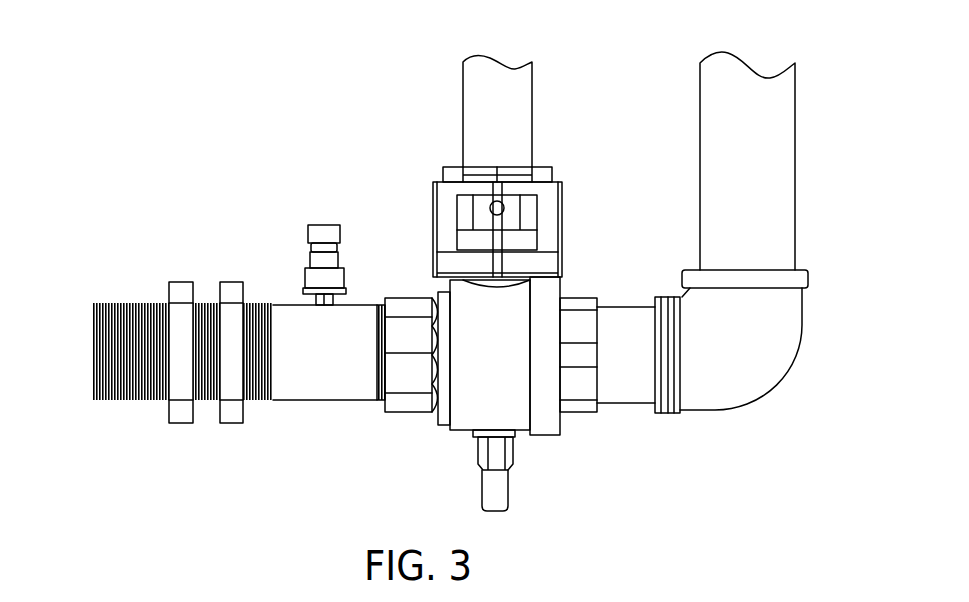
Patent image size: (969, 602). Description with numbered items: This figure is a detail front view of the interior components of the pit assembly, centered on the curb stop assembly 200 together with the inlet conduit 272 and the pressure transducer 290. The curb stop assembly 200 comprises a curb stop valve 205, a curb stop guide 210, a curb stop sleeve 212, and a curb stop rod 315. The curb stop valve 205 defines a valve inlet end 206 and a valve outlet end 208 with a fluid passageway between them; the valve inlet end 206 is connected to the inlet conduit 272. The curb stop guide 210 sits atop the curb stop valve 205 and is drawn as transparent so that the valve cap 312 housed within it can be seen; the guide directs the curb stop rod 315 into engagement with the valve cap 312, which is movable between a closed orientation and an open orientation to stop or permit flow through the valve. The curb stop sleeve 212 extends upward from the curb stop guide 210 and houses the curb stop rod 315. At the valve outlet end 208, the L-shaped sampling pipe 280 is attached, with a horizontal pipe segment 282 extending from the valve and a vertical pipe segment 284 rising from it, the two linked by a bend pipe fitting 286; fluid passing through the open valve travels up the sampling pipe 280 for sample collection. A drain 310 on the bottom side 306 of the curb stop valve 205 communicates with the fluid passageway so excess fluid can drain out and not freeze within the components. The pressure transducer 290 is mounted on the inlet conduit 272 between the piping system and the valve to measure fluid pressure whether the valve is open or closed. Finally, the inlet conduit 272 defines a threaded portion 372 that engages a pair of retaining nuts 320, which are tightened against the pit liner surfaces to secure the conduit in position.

The curb stop assembly 200 is at (586, 188).
The curb stop valve 205 is at (497, 355).
The valve inlet end 206 is at (378, 352).
The valve outlet end 208 is at (600, 325).
The curb stop guide 210 is at (433, 215).
The curb stop sleeve 212 is at (498, 84).
The inlet conduit 272 is at (300, 318).
The sampling pipe 280 is at (814, 178).
The horizontal pipe segment 282 is at (625, 385).
The vertical pipe segment 284 is at (773, 140).
The bend pipe fitting 286 is at (787, 337).
The pressure transducer 290 is at (319, 222).
The bottom side 306 is at (456, 437).
The drain 310 is at (488, 490).
The valve cap 312 is at (538, 268).
The curb stop rod 315 is at (515, 195).
The retaining nuts 320 is at (230, 412).
The threaded portion 372 is at (112, 325).